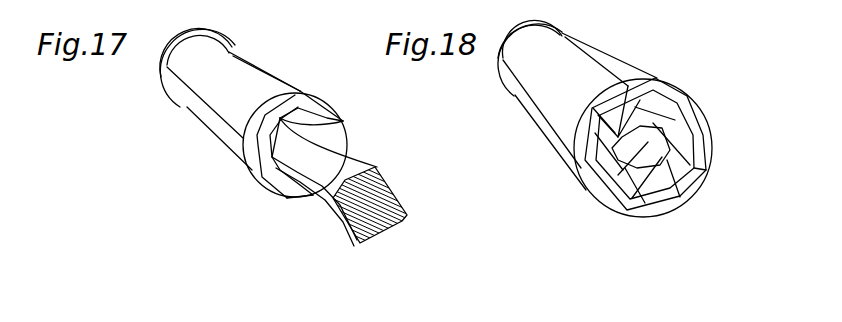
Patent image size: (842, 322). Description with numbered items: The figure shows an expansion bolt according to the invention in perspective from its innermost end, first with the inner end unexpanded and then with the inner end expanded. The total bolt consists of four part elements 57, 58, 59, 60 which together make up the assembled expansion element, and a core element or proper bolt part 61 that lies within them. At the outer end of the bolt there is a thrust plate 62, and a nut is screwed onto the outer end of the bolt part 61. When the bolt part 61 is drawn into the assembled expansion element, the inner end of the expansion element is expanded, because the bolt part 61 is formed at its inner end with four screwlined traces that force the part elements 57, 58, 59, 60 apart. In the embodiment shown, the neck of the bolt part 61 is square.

In FIG. 17, the part element 57 is at (232, 102).
In FIG. 18, the part element 57 is at (562, 83).
In FIG. 17, the part element 58 is at (318, 108).
In FIG. 18, the part element 58 is at (628, 72).
In FIG. 17, the part element 59 is at (302, 200).
In FIG. 18, the part element 59 is at (702, 178).
In FIG. 17, the part element 60 is at (280, 192).
In FIG. 18, the part element 60 is at (610, 208).
In FIG. 17, the bolt part 61 is at (373, 215).
In FIG. 18, the bolt part 61 is at (640, 153).
In FIG. 17, the thrust plate 62 is at (160, 88).
In FIG. 18, the thrust plate 62 is at (502, 85).